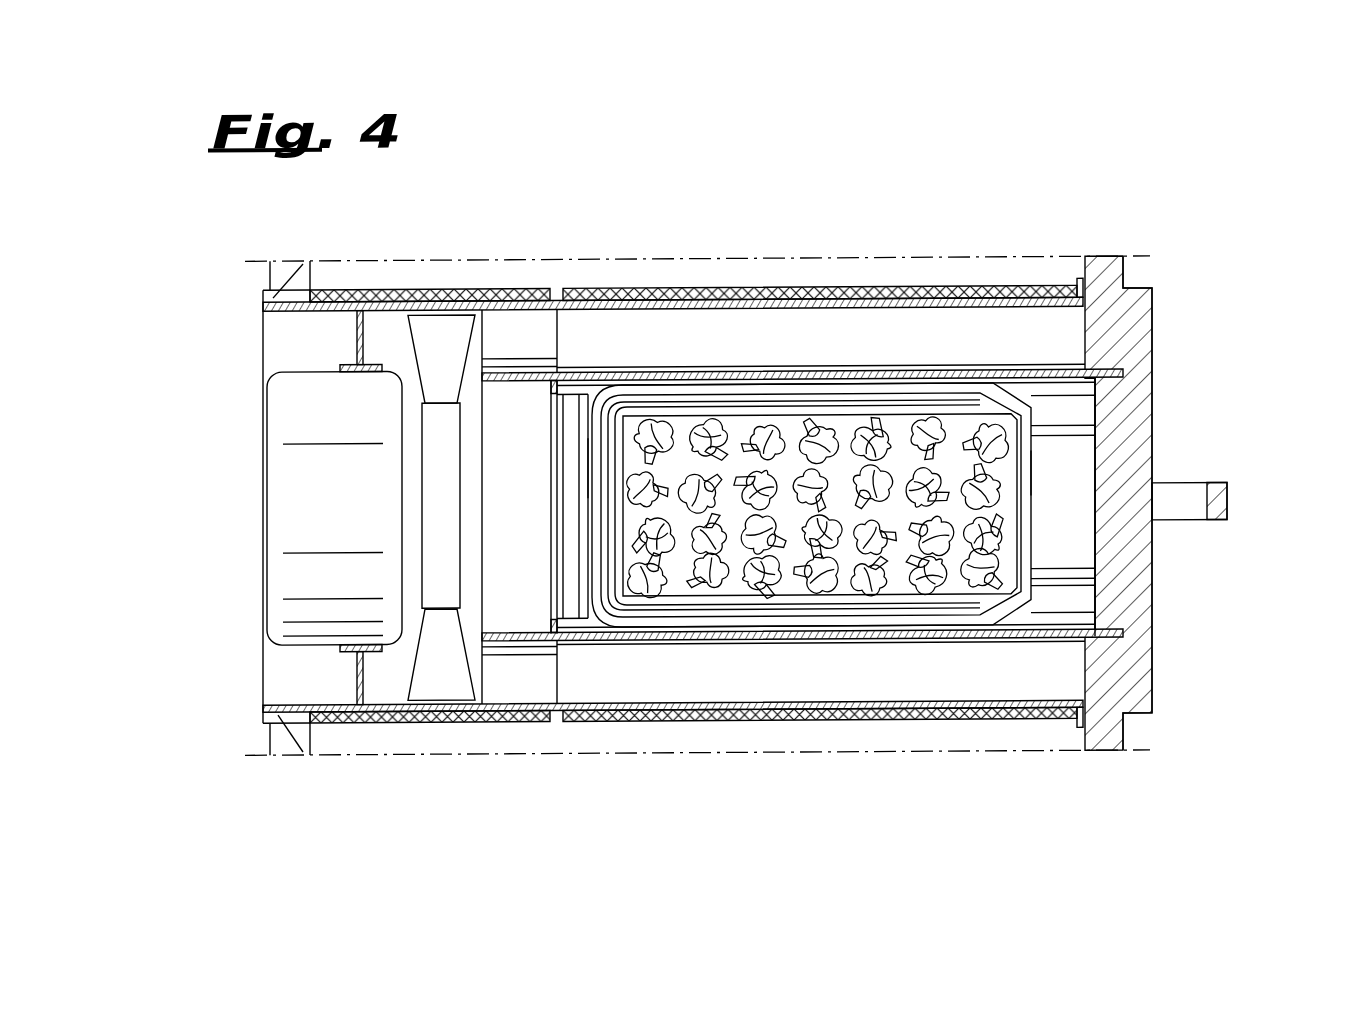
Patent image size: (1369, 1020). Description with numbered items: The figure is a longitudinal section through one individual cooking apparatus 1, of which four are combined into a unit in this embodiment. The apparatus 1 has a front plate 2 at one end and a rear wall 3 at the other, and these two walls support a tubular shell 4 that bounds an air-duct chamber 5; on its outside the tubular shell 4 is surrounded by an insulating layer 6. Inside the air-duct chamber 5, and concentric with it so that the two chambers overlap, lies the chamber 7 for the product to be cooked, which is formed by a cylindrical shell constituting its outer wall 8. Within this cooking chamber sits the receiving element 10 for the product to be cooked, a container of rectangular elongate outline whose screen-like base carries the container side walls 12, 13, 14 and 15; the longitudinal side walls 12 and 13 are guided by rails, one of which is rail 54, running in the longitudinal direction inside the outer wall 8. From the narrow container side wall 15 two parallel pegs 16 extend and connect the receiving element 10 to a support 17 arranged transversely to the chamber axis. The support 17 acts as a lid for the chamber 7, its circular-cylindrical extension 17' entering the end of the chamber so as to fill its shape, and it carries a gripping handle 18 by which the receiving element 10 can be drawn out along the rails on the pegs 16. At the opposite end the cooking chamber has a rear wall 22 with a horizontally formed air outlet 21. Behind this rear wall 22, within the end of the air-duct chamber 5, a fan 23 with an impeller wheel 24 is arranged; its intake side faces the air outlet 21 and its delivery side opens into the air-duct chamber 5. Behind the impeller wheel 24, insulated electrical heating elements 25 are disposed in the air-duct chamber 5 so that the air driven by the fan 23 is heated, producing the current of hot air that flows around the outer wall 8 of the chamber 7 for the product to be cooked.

The apparatus 1 is at (767, 203).
The front plate 2 is at (1102, 688).
The rear wall 3 is at (288, 742).
The tubular shell 4 is at (726, 707).
The air-duct chamber 5 is at (765, 667).
The insulating layer 6 is at (852, 710).
The chamber for the product to be cooked 7 is at (1057, 603).
The outer wall 8 is at (905, 633).
The receiving element for the product to be cooked 10 is at (1033, 478).
The container side wall 12 is at (877, 600).
The container side wall 13 is at (925, 396).
The container side wall 14 is at (626, 514).
The container side wall 15 is at (1090, 440).
The pegs 16 is at (1048, 432).
The support 17 is at (1227, 502).
The extension 17' is at (1211, 507).
The gripping handle 18 is at (1218, 498).
The air outlet 21 is at (589, 469).
The rear wall 22 is at (574, 508).
The fan 23 is at (308, 479).
The impeller wheel 24 is at (442, 338).
The insulated electrical heating elements 25 is at (515, 324).
The rail 54 is at (1042, 389).